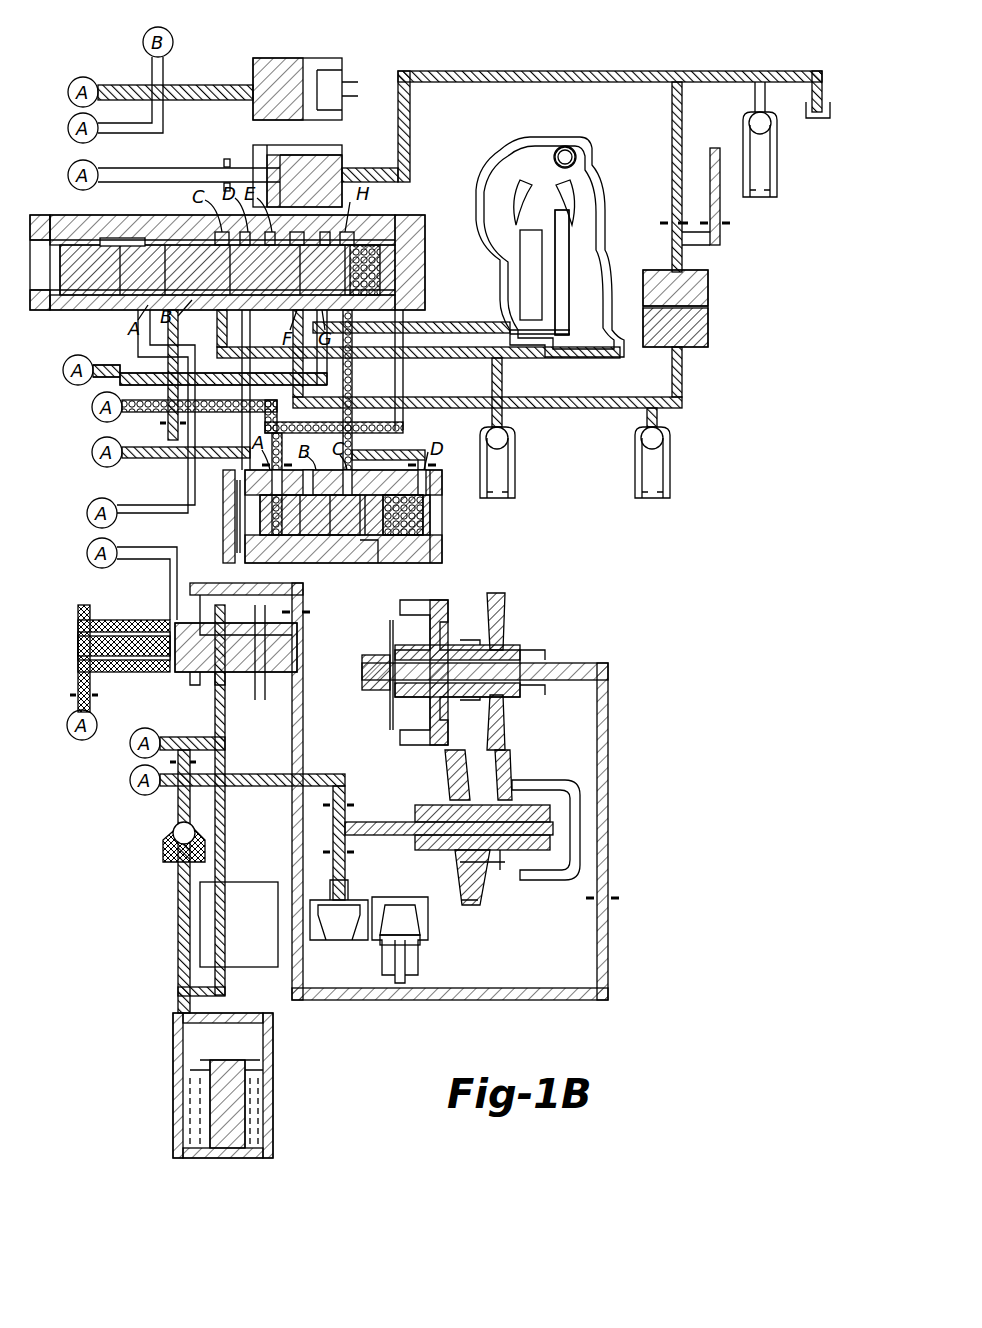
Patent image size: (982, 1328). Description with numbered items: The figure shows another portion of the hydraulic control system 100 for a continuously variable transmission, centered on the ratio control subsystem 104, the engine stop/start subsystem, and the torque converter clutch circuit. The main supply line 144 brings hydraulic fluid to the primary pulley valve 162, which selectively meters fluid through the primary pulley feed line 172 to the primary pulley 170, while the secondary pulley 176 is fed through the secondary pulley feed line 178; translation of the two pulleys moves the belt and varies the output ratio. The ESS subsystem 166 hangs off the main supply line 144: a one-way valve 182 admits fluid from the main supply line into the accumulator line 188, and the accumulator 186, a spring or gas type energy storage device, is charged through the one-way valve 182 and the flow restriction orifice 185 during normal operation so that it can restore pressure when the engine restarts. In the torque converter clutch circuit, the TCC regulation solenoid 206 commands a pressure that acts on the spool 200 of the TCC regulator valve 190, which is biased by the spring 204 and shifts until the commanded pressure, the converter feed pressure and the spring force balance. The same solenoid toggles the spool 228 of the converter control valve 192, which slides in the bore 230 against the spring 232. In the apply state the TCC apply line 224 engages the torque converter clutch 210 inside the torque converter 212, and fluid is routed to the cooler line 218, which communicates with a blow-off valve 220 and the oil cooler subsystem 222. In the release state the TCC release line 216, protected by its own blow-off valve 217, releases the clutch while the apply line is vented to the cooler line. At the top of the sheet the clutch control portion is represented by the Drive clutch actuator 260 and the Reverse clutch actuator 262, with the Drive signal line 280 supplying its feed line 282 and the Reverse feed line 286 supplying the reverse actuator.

The hydraulic control system 100 is at (708, 712).
The ratio control subsystem 104 is at (644, 788).
The main supply line 144 is at (206, 737).
The primary pulley valve 162 is at (235, 672).
The ESS subsystem 166 is at (312, 1047).
The primary pulley 170 is at (504, 617).
The primary pulley feed line 172 is at (473, 1000).
The secondary pulley 176 is at (512, 898).
The secondary pulley feed line 178 is at (308, 774).
The one-way valve 182 is at (163, 850).
The flow restriction orifice 185 is at (196, 762).
The accumulator 186 is at (273, 1100).
The accumulator line 188 is at (228, 990).
The TCC regulator valve 190 is at (458, 530).
The converter control valve 192 is at (450, 262).
The spool 200 is at (302, 563).
The spring 204 is at (392, 563).
The TCC regulation solenoid 206 is at (766, 316).
The torque converter clutch 210 is at (548, 300).
The torque converter 212 is at (568, 137).
The TCC release line 216 is at (530, 358).
The blow-off valve 217 is at (515, 478).
The cooler line 218 is at (684, 368).
The blow-off valve 220 is at (670, 478).
The oil cooler subsystem 222 is at (722, 262).
The TCC apply line 224 is at (444, 322).
The spool 228 is at (73, 300).
The bore 230 is at (70, 255).
The spring 232 is at (108, 300).
The Drive clutch actuator 260 is at (328, 145).
The Reverse clutch actuator 262 is at (276, 58).
The Drive signal line 280 is at (150, 133).
The feed line 282 is at (208, 168).
The feed line 286 is at (210, 85).